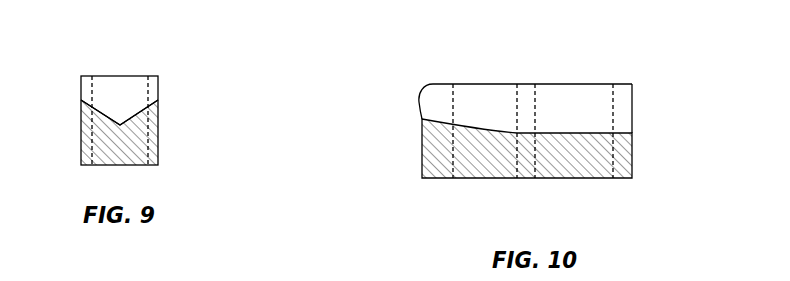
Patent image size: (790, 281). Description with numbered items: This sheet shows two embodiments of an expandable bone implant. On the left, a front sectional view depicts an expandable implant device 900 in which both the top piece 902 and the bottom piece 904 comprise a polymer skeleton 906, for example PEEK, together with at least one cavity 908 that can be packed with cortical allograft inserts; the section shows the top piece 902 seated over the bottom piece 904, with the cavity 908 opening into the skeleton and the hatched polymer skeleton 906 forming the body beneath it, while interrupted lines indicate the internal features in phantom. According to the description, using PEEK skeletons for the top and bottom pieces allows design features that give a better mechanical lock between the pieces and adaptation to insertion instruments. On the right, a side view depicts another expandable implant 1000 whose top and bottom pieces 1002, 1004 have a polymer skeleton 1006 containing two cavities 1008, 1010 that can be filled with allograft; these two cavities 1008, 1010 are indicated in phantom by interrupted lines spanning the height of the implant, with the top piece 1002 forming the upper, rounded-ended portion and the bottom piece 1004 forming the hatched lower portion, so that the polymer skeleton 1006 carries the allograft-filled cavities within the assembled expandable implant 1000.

In FIG. 9, the expandable implant device 900 is at (168, 97).
In FIG. 9, the top piece 902 is at (160, 81).
In FIG. 9, the bottom piece 904 is at (159, 142).
In FIG. 9, the polymer skeleton 906 is at (93, 145).
In FIG. 9, the cavity 908 is at (120, 89).
In FIG. 10, the expandable implant 1000 is at (565, 116).
In FIG. 10, the top piece 1002 is at (634, 103).
In FIG. 10, the bottom piece 1004 is at (634, 158).
In FIG. 10, the polymer skeleton 1006 is at (438, 173).
In FIG. 10, the cavity 1008 is at (484, 74).
In FIG. 10, the cavity 1010 is at (572, 74).